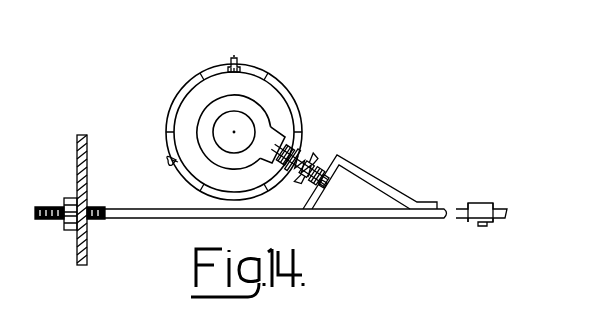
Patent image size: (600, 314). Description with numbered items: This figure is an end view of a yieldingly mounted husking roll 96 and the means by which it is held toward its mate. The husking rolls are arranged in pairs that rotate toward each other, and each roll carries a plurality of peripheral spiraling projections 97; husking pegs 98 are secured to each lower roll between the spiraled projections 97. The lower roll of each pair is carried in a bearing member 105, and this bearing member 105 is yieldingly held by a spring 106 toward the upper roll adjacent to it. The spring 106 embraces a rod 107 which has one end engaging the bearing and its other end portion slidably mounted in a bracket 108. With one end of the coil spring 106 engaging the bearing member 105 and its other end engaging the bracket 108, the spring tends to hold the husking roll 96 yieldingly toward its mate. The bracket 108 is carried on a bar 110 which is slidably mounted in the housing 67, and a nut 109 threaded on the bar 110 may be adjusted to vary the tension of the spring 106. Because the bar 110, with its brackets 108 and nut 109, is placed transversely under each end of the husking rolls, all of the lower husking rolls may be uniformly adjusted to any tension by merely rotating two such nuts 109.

The housing 67 is at (85, 180).
The husking roll 96 is at (272, 102).
The peripheral spiraling projections 97 is at (182, 98).
The husking pegs 98 is at (244, 47).
The bearing member 105 is at (266, 128).
The spring 106 is at (307, 163).
The rod 107 is at (303, 186).
The bracket 108 is at (373, 180).
The nut 109 is at (72, 198).
The bar 110 is at (145, 212).